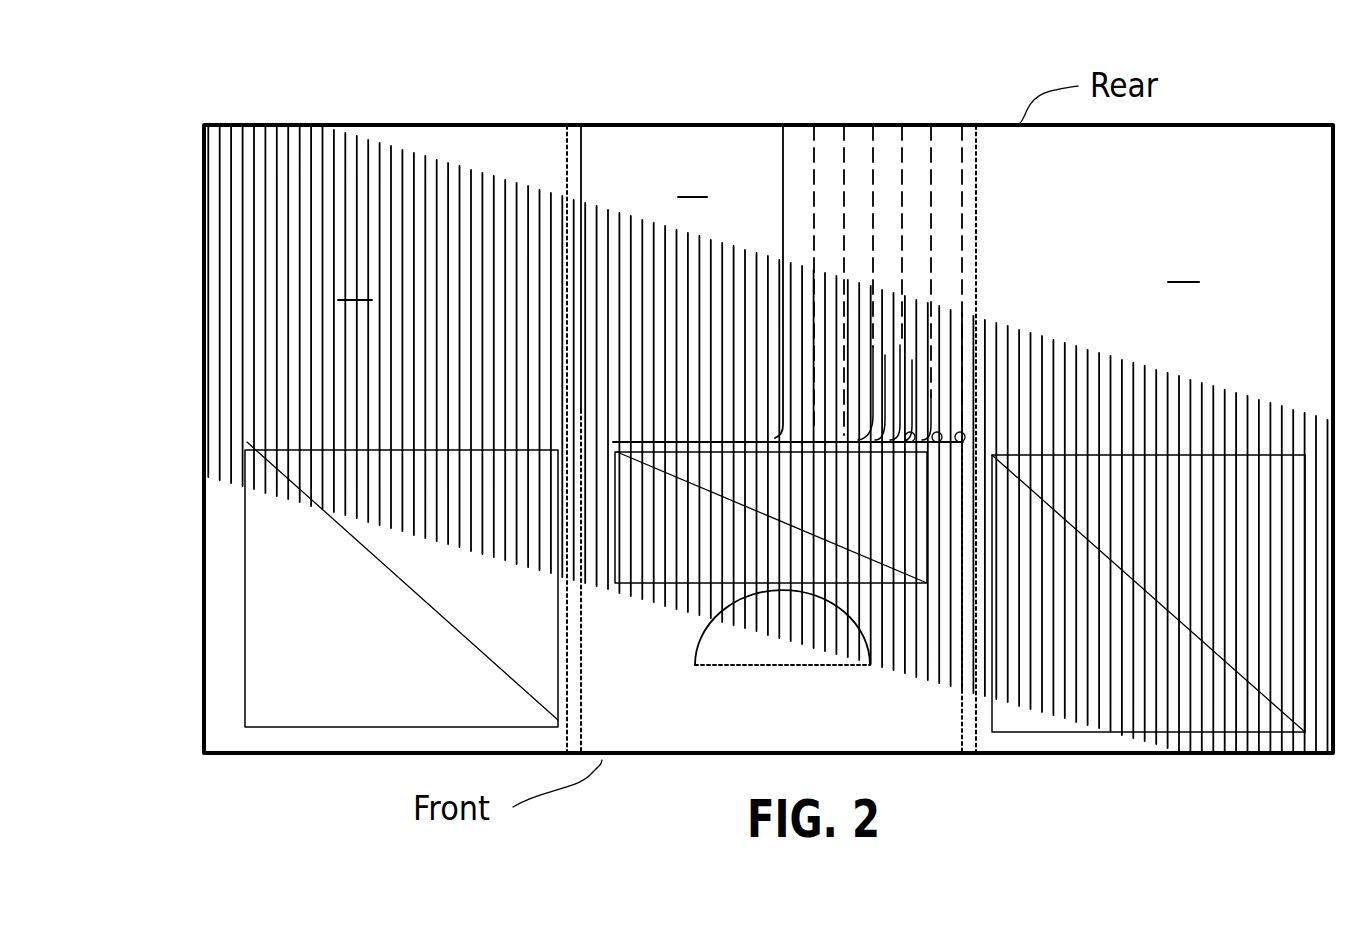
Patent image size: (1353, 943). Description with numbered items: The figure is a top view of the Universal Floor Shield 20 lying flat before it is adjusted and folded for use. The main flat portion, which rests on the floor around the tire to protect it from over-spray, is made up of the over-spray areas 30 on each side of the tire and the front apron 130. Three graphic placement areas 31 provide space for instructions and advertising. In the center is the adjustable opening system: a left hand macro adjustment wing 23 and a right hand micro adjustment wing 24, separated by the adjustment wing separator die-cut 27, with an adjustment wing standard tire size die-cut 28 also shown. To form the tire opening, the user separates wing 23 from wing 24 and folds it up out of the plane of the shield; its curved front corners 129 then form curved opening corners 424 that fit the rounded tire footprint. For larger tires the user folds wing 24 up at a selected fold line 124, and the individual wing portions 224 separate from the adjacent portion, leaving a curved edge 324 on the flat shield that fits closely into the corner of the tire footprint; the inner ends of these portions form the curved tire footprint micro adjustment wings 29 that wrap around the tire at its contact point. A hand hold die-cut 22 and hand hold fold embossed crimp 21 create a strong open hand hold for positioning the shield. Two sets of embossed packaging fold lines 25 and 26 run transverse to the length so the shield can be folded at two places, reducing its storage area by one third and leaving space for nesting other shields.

The Universal Floor Shield 20 is at (671, 766).
The hand hold fold embossed crimp 21 is at (800, 670).
The hand hold die-cut 22 is at (697, 640).
The macro adjustment wing 23 is at (692, 184).
The micro adjustment wing 24 is at (920, 250).
The left packaging fold lines 25 is at (582, 123).
The right packaging fold lines 26 is at (977, 123).
The adjustment wing separator die-cut 27 is at (783, 122).
The adjustment wing standard tire size die-cut 28 is at (677, 407).
The curved tire footprint micro adjustment wings 29 is at (788, 431).
The over-spray areas 30 is at (768, 278).
The graphic placement areas 31 is at (374, 689).
The fold lines 124 is at (873, 277).
The wing portions 224 is at (952, 152).
The curved front corners 129 is at (763, 422).
The curved opening corners 424 is at (765, 430).
The curved edge 324 is at (930, 447).
The front apron 130 is at (885, 727).